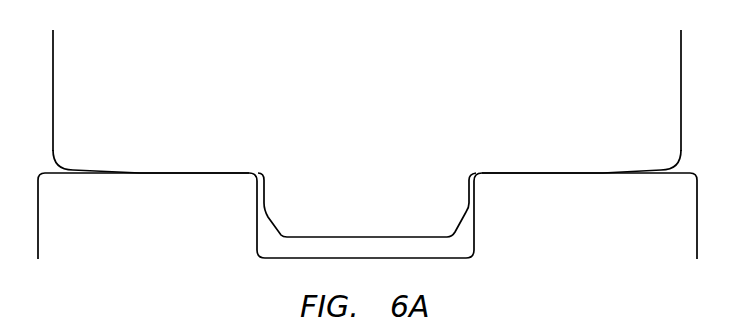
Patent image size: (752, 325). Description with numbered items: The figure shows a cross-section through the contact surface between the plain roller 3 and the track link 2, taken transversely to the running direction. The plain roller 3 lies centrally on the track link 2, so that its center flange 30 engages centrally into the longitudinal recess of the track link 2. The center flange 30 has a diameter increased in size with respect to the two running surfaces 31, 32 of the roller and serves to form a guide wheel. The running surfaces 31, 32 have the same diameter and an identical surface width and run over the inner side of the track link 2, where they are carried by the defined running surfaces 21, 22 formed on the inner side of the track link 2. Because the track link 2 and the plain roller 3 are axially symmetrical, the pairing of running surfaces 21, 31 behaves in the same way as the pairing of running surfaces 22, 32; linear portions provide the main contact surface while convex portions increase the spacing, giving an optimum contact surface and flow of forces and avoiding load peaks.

The track link 2 is at (210, 254).
The plain roller 3 is at (356, 129).
The running surface 21 is at (541, 180).
The running surface 22 is at (175, 180).
The center flange 30 is at (368, 235).
The running surface 31 is at (652, 168).
The running surface 32 is at (80, 169).